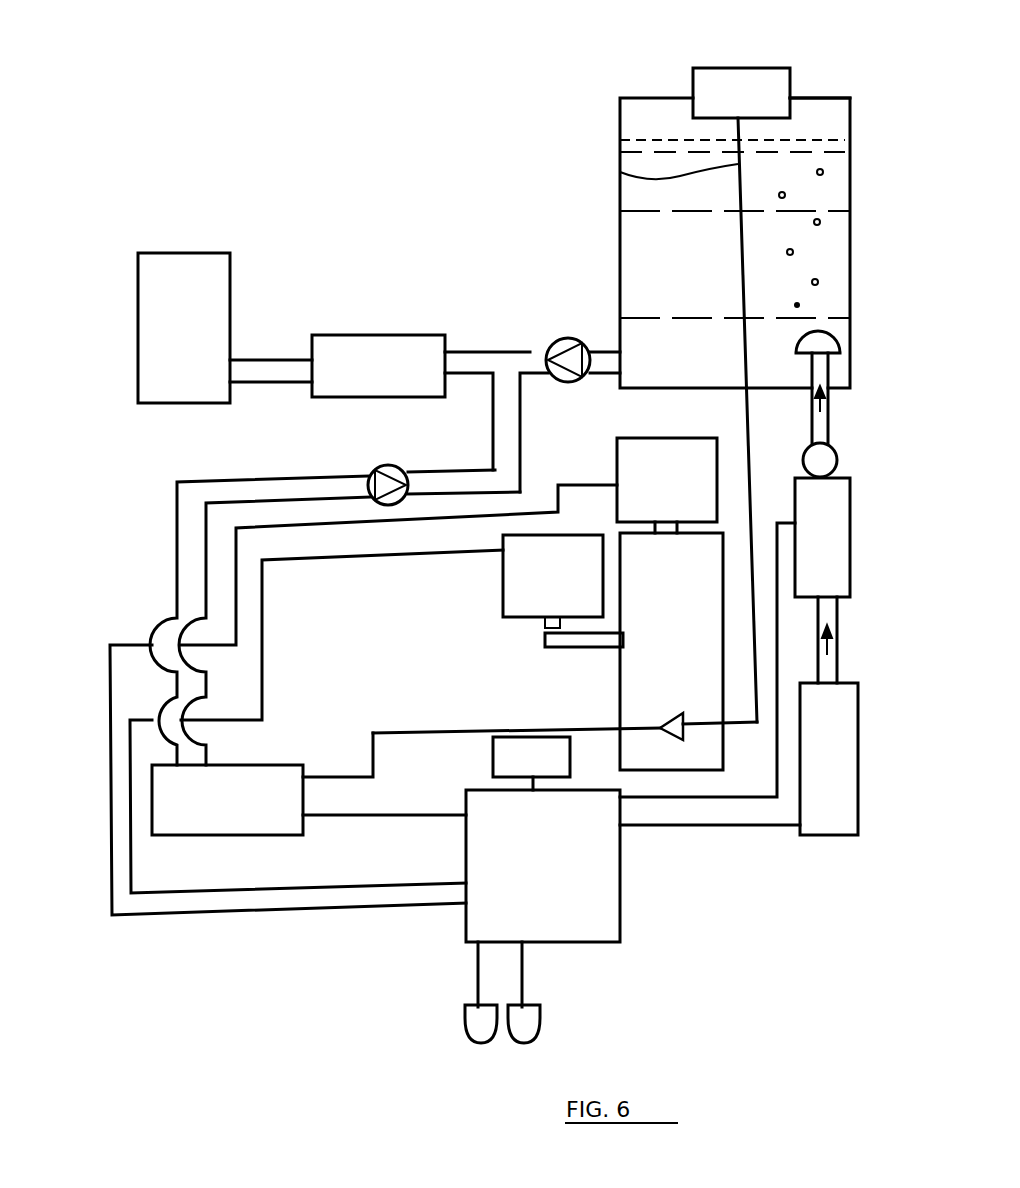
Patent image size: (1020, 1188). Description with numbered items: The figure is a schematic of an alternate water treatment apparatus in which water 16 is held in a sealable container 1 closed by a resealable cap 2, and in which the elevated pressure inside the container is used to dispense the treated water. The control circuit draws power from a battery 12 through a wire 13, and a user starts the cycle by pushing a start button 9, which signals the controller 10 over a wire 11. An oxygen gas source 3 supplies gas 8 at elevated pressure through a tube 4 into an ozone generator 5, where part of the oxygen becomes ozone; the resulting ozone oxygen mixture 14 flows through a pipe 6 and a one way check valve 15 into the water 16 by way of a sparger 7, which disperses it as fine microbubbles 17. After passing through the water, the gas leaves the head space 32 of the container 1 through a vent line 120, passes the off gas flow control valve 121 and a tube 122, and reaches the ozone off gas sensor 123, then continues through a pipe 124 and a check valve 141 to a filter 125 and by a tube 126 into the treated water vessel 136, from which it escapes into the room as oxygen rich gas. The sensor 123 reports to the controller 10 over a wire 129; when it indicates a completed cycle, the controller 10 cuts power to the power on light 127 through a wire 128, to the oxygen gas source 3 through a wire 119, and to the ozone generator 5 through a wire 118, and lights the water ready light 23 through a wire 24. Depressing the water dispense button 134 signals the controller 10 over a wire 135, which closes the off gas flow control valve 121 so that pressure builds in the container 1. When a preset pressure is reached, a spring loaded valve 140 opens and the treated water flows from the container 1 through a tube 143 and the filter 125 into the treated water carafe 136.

The container 1 is at (846, 195).
The cap 2 is at (738, 68).
The oxygen gas source 3 is at (850, 750).
The tube 4 is at (840, 612).
The ozone generator 5 is at (850, 536).
The pipe 6 is at (810, 408).
The sparger 7 is at (832, 346).
The gas 8 is at (830, 662).
The start button 9 is at (503, 588).
The controller 10 is at (620, 918).
The wire 11 is at (312, 560).
The battery 12 is at (513, 737).
The wire 13 is at (530, 790).
The ozone oxygen mixture 14 is at (830, 406).
The one way check valve 15 is at (838, 462).
The water 16 is at (835, 152).
The microbubbles 17 is at (795, 253).
The water ready light 23 is at (540, 1022).
The wire 24 is at (522, 970).
The head space 32 is at (814, 98).
The wire 118 is at (740, 797).
The wire 119 is at (735, 826).
The vent line 120 is at (622, 176).
The off gas flow control valve 121 is at (668, 712).
The tube 122 is at (398, 733).
The ozone off gas sensor 123 is at (232, 835).
The pipe 124 is at (177, 497).
The filter 125 is at (378, 335).
The tube 126 is at (275, 360).
The power on light 127 is at (465, 1022).
The wire 128 is at (478, 970).
The wire 129 is at (375, 815).
The water dispense button 134 is at (660, 440).
The wire 135 is at (110, 845).
The treated water vessel 136 is at (185, 253).
The valve 140 is at (568, 338).
The pump 141 is at (388, 465).
The tube 143 is at (470, 352).